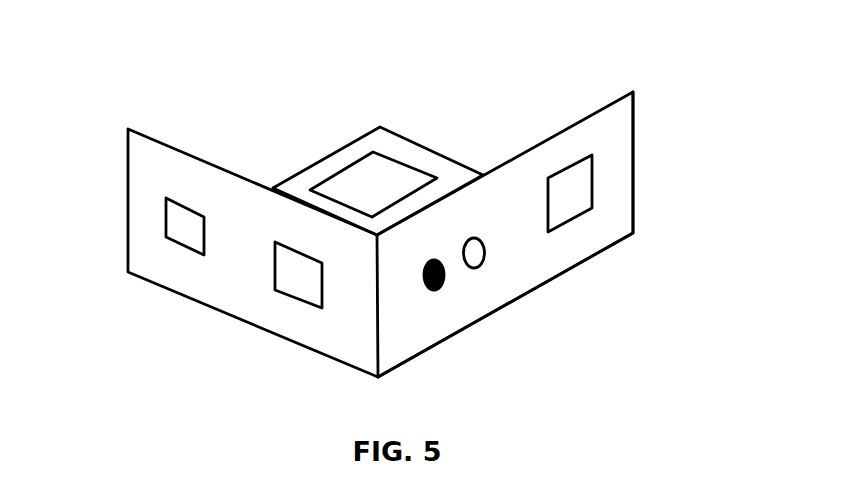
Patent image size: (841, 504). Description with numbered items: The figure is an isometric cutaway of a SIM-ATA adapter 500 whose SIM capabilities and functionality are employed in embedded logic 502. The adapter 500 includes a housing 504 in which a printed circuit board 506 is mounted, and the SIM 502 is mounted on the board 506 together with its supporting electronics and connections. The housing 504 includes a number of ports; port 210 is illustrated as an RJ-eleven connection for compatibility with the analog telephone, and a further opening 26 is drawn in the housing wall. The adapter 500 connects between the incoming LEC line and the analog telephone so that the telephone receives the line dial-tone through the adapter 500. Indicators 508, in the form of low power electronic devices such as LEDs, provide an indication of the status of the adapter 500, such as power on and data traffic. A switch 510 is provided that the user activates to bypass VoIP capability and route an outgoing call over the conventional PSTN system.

The SIM-ATA adapter 500 is at (394, 191).
The embedded logic 502 is at (350, 167).
The housing 504 is at (633, 140).
The printed circuit board 506 is at (393, 132).
The indicators 508 is at (488, 283).
The switch 510 is at (592, 190).
The opening 26 is at (167, 243).
The port 210 is at (297, 297).